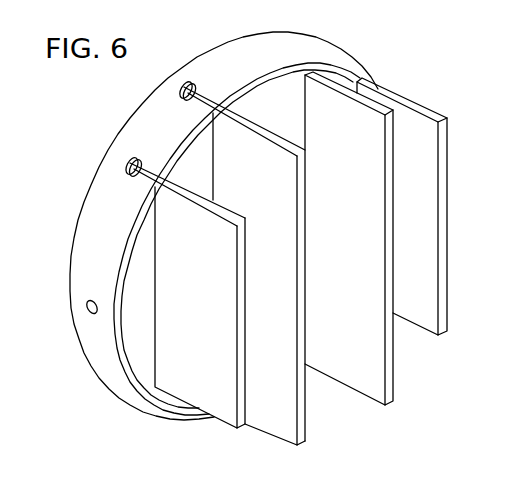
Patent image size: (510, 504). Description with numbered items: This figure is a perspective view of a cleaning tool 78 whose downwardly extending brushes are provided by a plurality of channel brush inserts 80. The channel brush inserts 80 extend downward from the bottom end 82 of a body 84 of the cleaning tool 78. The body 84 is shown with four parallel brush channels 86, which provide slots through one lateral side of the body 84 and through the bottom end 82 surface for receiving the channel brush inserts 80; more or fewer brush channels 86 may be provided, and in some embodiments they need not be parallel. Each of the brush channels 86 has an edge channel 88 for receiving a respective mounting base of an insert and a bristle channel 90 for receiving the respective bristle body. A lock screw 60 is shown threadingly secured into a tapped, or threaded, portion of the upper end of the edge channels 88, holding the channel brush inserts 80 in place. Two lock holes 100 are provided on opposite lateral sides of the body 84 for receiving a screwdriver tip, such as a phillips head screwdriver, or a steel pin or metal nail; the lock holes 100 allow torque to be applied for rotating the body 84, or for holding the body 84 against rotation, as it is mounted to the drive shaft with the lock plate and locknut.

The cleaning tool 78 is at (410, 38).
The channel brush inserts 80 is at (444, 208).
The bottom end 82 is at (333, 77).
The body 84 is at (82, 370).
The brush channels 86 is at (130, 185).
The edge channels 88 is at (186, 82).
The lock screw 60 is at (181, 89).
The bristle channels 90 is at (155, 372).
The lock holes 100 is at (87, 315).